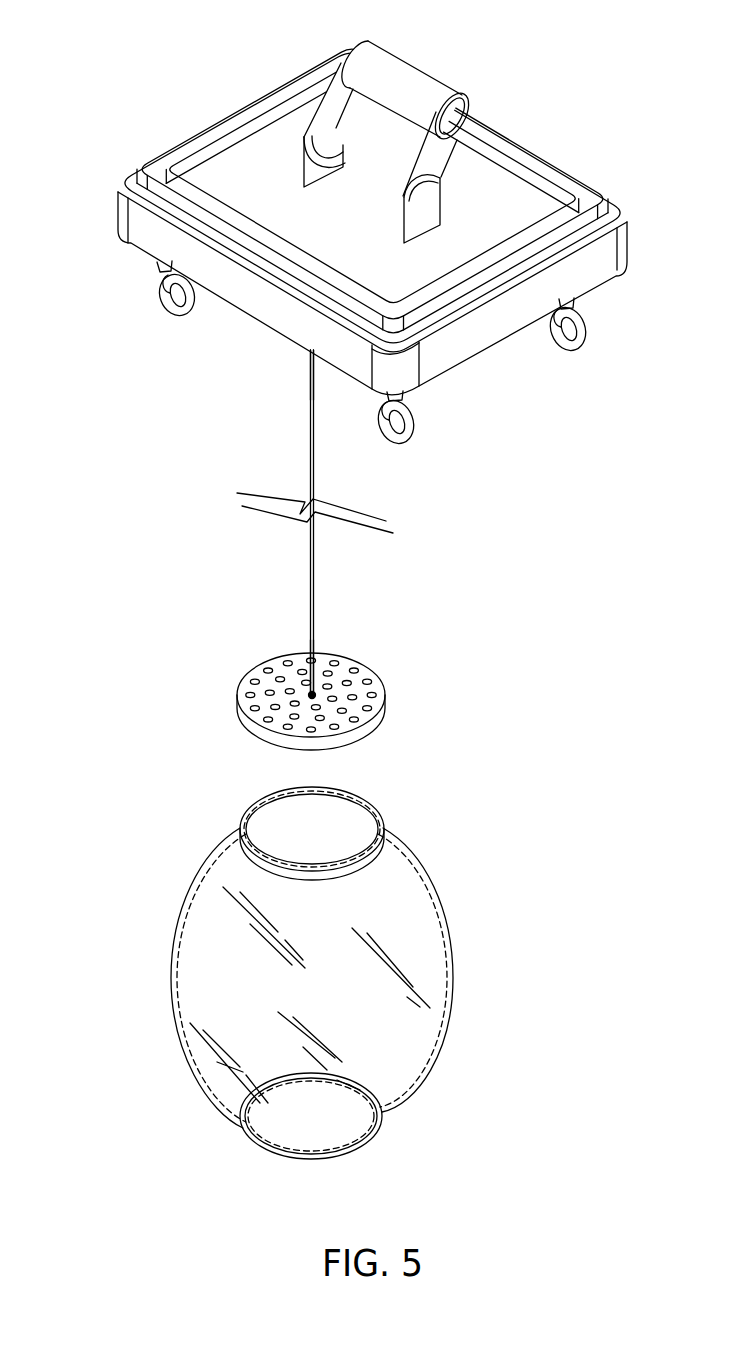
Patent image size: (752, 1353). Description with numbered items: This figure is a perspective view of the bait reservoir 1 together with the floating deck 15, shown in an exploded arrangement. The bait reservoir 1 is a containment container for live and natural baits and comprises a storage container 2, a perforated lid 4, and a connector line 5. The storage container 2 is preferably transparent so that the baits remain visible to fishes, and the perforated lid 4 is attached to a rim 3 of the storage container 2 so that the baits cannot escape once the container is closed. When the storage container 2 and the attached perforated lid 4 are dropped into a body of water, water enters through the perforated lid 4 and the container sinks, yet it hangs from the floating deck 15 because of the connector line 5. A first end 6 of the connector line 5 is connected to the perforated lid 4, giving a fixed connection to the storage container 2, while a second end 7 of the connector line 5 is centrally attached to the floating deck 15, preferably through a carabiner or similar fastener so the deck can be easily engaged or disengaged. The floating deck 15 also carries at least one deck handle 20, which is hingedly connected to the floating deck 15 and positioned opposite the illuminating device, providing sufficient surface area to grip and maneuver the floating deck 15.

The bait reservoir 1 is at (100, 666).
The storage container 2 is at (454, 954).
The rim 3 is at (248, 812).
The perforated lid 4 is at (386, 713).
The connector line 5 is at (314, 578).
The first end 6 is at (302, 645).
The second end 7 is at (296, 357).
The floating deck 15 is at (120, 222).
The deck handle 20 is at (433, 86).